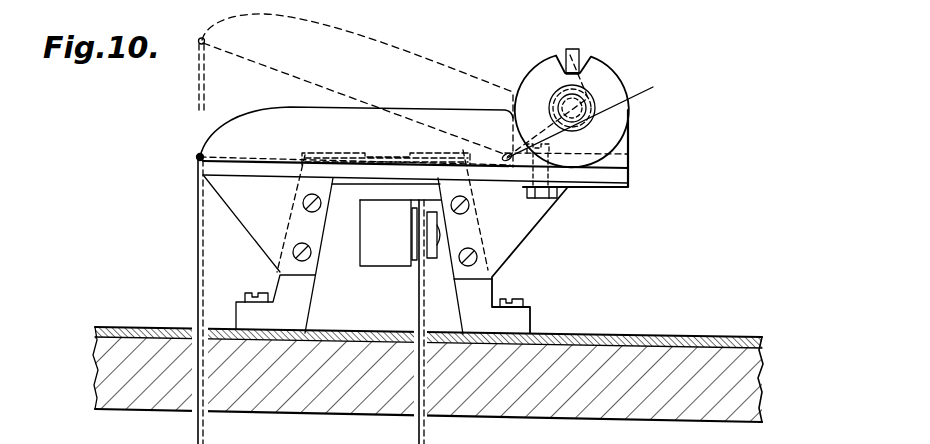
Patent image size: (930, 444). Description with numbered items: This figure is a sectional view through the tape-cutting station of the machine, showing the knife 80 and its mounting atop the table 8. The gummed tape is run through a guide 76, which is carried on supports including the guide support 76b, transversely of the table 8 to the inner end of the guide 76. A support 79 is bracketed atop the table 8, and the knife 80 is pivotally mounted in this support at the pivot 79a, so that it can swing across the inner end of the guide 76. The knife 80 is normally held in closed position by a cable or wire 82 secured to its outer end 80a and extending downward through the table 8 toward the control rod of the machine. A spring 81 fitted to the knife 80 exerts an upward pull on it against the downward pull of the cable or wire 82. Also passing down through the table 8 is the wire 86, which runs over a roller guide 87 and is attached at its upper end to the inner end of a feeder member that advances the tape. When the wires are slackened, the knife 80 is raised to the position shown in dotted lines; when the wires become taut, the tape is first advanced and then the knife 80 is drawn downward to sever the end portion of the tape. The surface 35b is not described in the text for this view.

The table 8 is at (312, 409).
The bed surface 35b is at (429, 390).
The guide 76 is at (320, 150).
The guide support 76b is at (482, 294).
The support 79 is at (630, 148).
The pivot 79a is at (599, 106).
The knife 80 is at (227, 137).
The outer end of knife 80a is at (200, 157).
The spring 81 is at (566, 48).
The cable or wire 82 is at (197, 244).
The wire 86 is at (418, 310).
The roller guide 87 is at (413, 250).